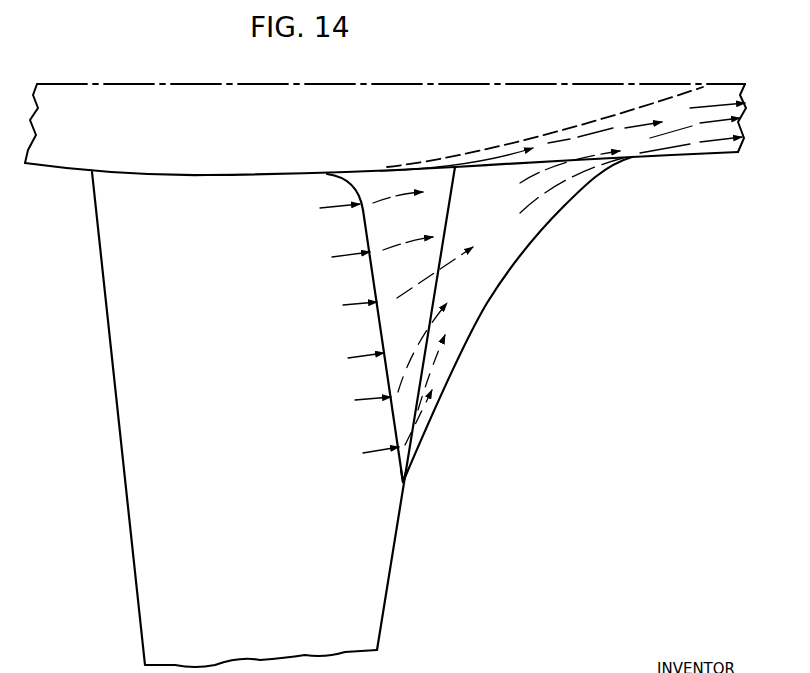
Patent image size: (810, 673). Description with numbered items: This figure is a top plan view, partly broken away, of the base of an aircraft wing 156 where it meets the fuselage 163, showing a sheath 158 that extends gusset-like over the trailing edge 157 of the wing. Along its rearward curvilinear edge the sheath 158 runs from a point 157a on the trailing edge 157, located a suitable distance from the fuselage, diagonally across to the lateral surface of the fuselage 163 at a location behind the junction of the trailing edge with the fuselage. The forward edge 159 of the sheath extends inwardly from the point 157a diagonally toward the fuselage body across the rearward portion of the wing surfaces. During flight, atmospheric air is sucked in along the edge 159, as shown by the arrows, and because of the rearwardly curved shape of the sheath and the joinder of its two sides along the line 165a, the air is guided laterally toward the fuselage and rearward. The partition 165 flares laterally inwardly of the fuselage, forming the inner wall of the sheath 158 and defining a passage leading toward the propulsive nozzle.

The wing 156 is at (105, 303).
The trailing edge 157 is at (400, 512).
The point on trailing edge 157a is at (405, 482).
The sheath 158 is at (492, 260).
The forward edge of sheath 159 is at (380, 327).
The fuselage 163 is at (86, 83).
The partition 165 is at (593, 123).
The joinder line 165a is at (482, 303).